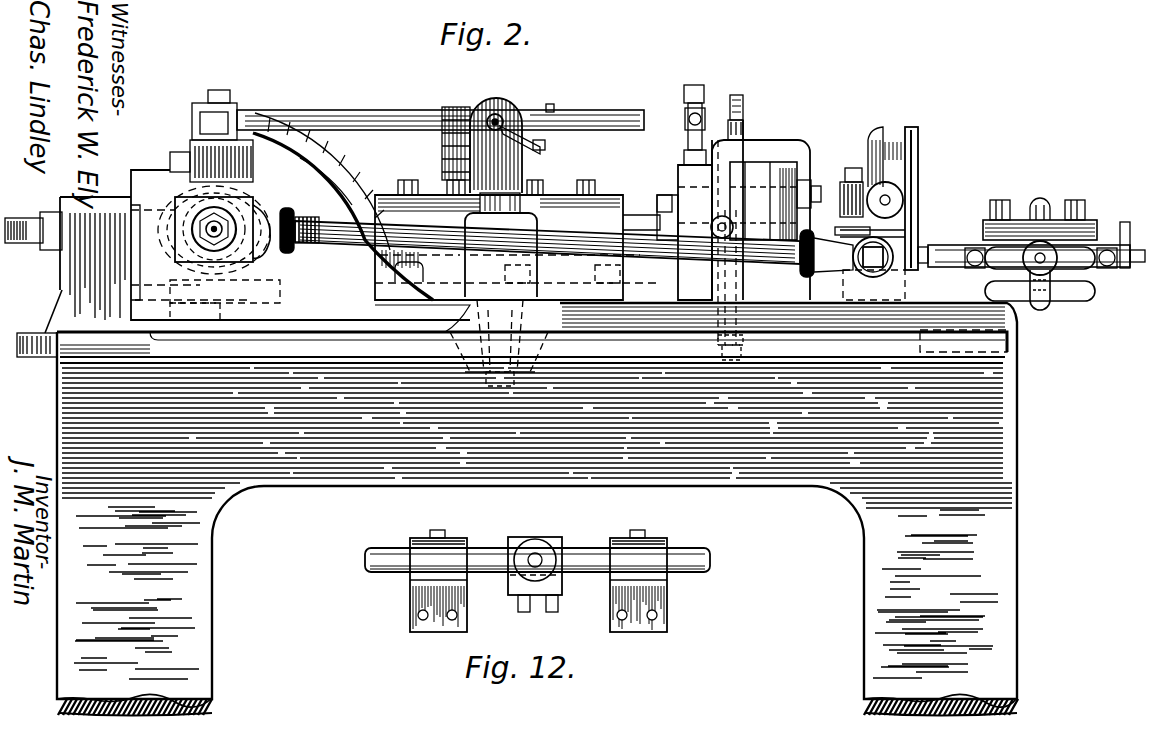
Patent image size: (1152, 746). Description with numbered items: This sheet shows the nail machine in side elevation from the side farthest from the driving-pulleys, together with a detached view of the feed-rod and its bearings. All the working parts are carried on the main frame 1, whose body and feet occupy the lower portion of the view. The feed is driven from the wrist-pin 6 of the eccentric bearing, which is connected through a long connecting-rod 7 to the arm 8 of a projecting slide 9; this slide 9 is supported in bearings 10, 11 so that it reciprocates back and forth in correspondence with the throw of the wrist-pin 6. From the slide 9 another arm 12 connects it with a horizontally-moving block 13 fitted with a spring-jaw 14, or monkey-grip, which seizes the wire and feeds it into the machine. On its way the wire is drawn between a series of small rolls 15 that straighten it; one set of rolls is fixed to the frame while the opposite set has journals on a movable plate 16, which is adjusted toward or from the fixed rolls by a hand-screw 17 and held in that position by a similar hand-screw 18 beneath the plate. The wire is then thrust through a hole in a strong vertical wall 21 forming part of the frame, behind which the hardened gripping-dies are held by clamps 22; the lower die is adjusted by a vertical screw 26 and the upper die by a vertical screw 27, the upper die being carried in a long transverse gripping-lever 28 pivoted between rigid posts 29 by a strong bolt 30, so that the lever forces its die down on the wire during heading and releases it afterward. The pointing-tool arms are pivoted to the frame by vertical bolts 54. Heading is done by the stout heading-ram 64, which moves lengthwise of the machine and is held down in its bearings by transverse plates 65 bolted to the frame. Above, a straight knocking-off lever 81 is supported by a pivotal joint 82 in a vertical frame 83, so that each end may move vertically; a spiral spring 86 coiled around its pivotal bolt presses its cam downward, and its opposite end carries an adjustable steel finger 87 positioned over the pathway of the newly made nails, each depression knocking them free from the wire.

In FIG. 2, the main frame 1 is at (612, 372).
In FIG. 2, the wrist-pin 6 is at (882, 262).
In FIG. 2, the connecting-rod 7 is at (596, 210).
In FIG. 2, the arm 8 is at (238, 205).
In FIG. 12, the projecting slide 9 is at (537, 548).
In FIG. 12, the bearing 10 is at (433, 573).
In FIG. 12, the bearing 11 is at (646, 573).
In FIG. 12, the arm 12 is at (535, 563).
In FIG. 2, the horizontally-moving block 13 is at (879, 213).
In FIG. 2, the spring-jaw 14 is at (852, 192).
In FIG. 2, the small rolls 15 is at (1093, 222).
In FIG. 2, the movable plate 16 is at (985, 242).
In FIG. 2, the hand-screw 17 is at (1082, 278).
In FIG. 2, the hand-screw 18 is at (1053, 280).
In FIG. 2, the vertical wall 21 is at (724, 208).
In FIG. 2, the clamps 22 is at (684, 232).
In FIG. 2, the vertical screw 26 is at (743, 253).
In FIG. 2, the vertical screw 27 is at (745, 103).
In FIG. 2, the gripping-lever 28 is at (762, 220).
In FIG. 2, the rigid posts 29 is at (770, 191).
In FIG. 2, the bolt 30 is at (814, 186).
In FIG. 2, the vertical bolts 54 is at (499, 343).
In FIG. 2, the heading-ram 64 is at (517, 246).
In FIG. 2, the transverse plates 65 is at (499, 183).
In FIG. 2, the knocking-off lever 81 is at (440, 109).
In FIG. 2, the pivotal joint 82 is at (493, 135).
In FIG. 2, the vertical frame 83 is at (492, 164).
In FIG. 2, the spiral spring 86 is at (483, 118).
In FIG. 2, the adjustable steel finger 87 is at (704, 123).